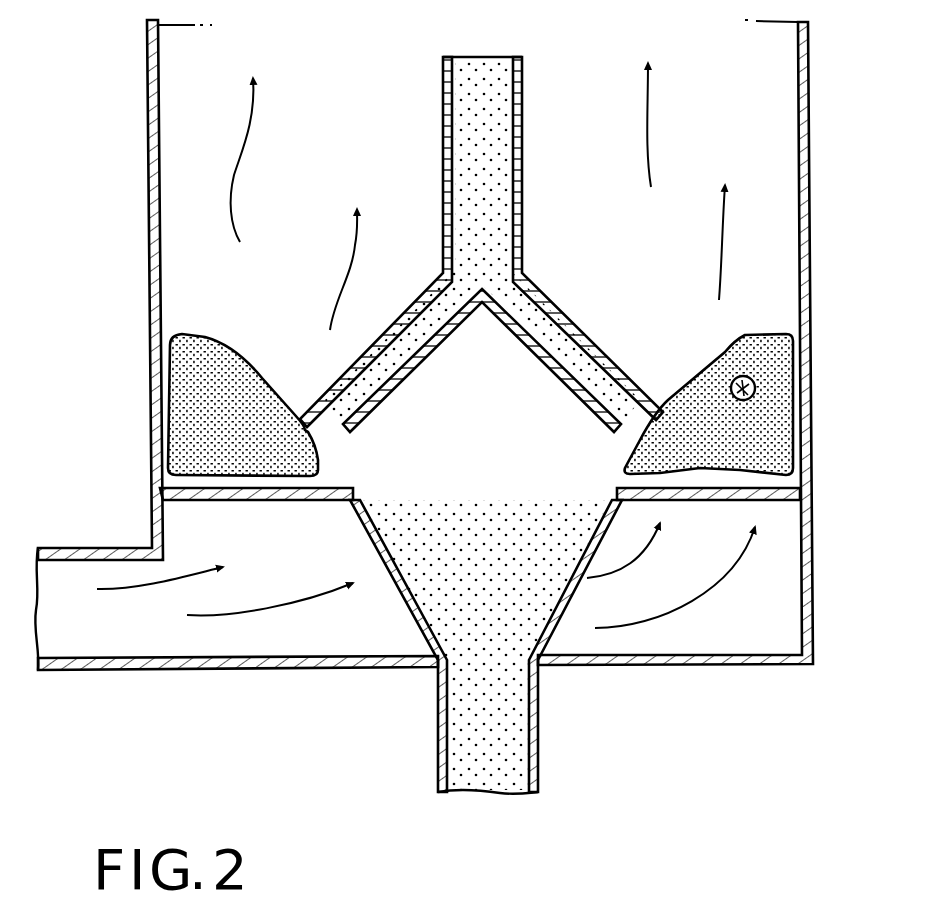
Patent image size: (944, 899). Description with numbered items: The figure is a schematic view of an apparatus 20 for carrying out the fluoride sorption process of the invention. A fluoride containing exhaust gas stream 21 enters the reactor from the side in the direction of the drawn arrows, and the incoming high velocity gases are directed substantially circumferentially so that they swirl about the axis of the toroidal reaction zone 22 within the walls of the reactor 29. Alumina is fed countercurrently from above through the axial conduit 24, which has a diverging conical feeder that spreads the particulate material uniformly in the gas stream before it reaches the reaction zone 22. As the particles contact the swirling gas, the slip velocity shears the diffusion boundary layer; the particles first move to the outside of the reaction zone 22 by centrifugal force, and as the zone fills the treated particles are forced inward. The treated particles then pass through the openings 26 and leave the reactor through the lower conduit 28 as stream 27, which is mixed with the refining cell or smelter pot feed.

The apparatus 20 is at (147, 39).
The walls of the reactor 29 is at (149, 183).
The axial conduit 24 is at (485, 98).
The toroidal reaction zone 22 is at (190, 410).
The passage openings 26 is at (586, 491).
The conduit 28 is at (396, 572).
The fluoride containing exhaust gas stream 21 is at (426, 575).
The stream 27 is at (483, 757).